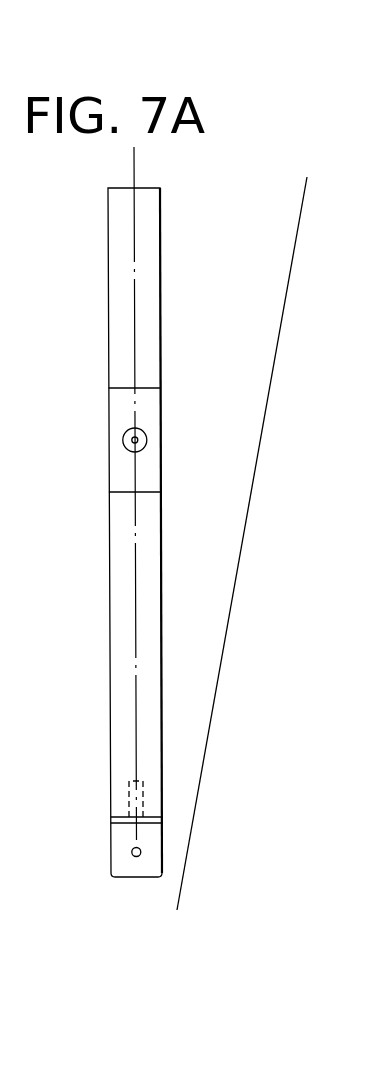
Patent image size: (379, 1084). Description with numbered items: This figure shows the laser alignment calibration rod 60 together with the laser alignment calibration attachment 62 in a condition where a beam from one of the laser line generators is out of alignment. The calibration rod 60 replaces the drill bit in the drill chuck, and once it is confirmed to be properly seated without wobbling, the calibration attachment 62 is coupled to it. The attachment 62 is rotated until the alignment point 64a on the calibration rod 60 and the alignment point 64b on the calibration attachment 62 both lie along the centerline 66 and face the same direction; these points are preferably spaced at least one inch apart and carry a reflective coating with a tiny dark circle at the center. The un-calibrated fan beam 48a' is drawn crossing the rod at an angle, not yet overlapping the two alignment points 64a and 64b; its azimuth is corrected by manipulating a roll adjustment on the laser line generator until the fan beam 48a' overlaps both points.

The laser alignment calibration rod 60 is at (162, 318).
The centerline 66 is at (136, 258).
The alignment point 64a is at (146, 432).
The laser alignment calibration attachment 62 is at (164, 835).
The alignment point 64b is at (137, 858).
The fan beam 48a' is at (277, 543).